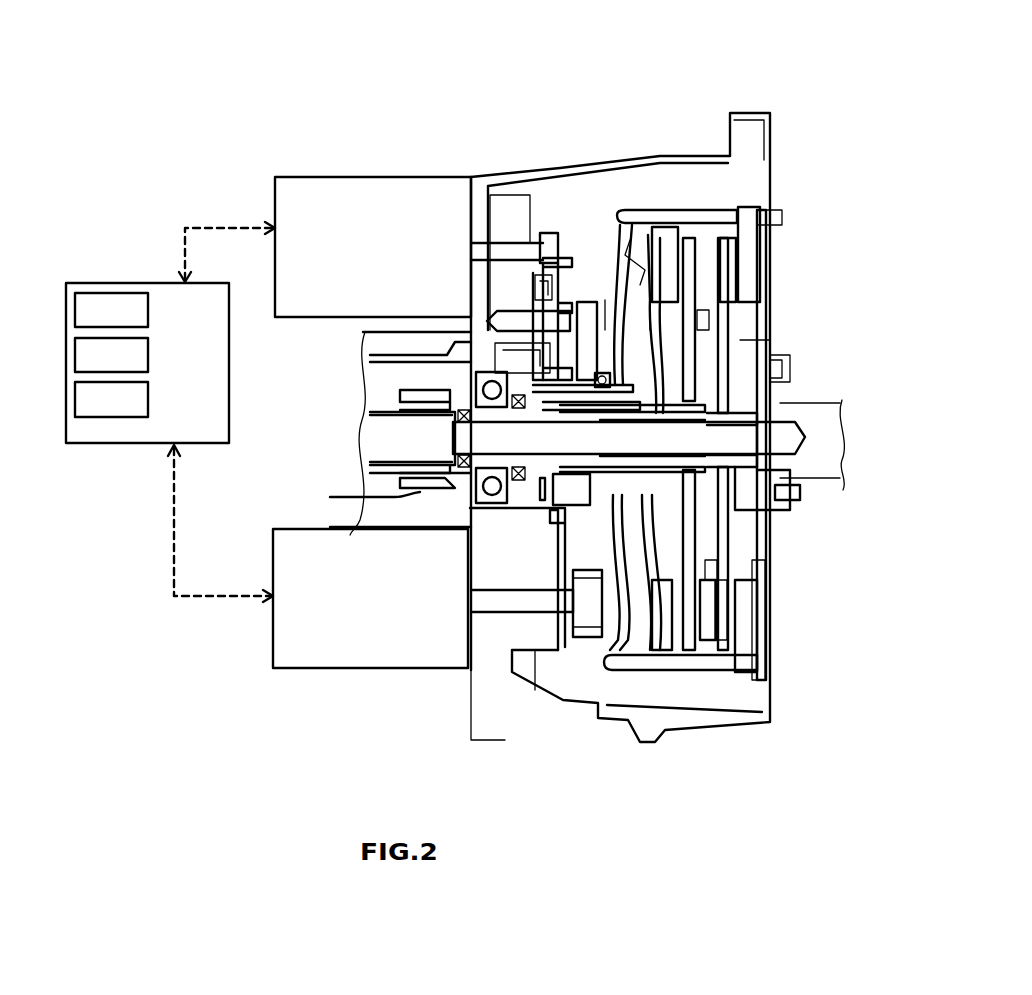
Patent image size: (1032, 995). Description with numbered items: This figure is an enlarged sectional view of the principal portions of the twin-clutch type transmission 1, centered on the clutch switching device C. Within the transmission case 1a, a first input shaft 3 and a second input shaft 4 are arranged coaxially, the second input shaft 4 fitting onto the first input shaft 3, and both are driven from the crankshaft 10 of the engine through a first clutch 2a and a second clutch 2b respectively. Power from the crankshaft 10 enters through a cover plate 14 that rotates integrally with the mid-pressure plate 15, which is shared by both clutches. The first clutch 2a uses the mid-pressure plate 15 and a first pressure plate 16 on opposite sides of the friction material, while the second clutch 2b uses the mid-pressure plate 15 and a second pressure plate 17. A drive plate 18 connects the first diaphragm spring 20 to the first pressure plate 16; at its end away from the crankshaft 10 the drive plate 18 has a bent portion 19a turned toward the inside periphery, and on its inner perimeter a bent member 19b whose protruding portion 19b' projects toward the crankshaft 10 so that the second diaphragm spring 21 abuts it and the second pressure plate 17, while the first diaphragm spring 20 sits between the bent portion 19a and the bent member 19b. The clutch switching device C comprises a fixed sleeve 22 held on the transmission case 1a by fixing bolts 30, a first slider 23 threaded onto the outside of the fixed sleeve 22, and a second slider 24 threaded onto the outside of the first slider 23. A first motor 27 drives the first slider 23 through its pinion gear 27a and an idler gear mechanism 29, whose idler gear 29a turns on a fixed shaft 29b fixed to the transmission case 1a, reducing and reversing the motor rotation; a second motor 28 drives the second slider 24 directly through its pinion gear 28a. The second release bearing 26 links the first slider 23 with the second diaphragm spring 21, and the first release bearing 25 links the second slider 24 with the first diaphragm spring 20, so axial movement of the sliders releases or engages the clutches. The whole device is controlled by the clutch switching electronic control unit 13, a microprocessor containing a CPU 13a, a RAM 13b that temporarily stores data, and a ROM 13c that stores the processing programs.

The twin-clutch type transmission 1 is at (250, 118).
The transmission case 1a is at (668, 722).
The first clutch 2a is at (742, 193).
The second clutch 2b is at (690, 192).
The first input shaft 3 is at (732, 443).
The second input shaft 4 is at (652, 460).
The crankshaft 10 is at (822, 420).
The clutch switching electronic control unit 13 is at (78, 445).
The CPU 13a is at (150, 310).
The RAM 13b is at (150, 356).
The ROM 13c is at (150, 400).
The cover plate 14 is at (770, 627).
The mid-pressure plate 15 is at (705, 245).
The first pressure plate 16 is at (750, 267).
The second pressure plate 17 is at (722, 305).
The drive plate 18 is at (726, 155).
The bent portion 19a is at (577, 690).
The bent member 19b is at (613, 214).
The protruding portion 19b' is at (648, 197).
The first diaphragm spring 20 is at (792, 365).
The second diaphragm spring 21 is at (760, 345).
The fixed sleeve 22 is at (380, 482).
The first slider 23 is at (580, 480).
The second slider 24 is at (600, 490).
The first release bearing 25 is at (533, 655).
The second release bearing 26 is at (715, 600).
The first motor 27 is at (332, 177).
The pinion gear 27a is at (548, 230).
The second motor 28 is at (287, 668).
The pinion gear 28a is at (583, 640).
The idler gear mechanism 29 is at (586, 240).
The idler gear 29a is at (535, 283).
The fixed shaft 29b is at (505, 322).
The fixing bolts 30 is at (500, 360).
The clutch switching device C is at (590, 200).